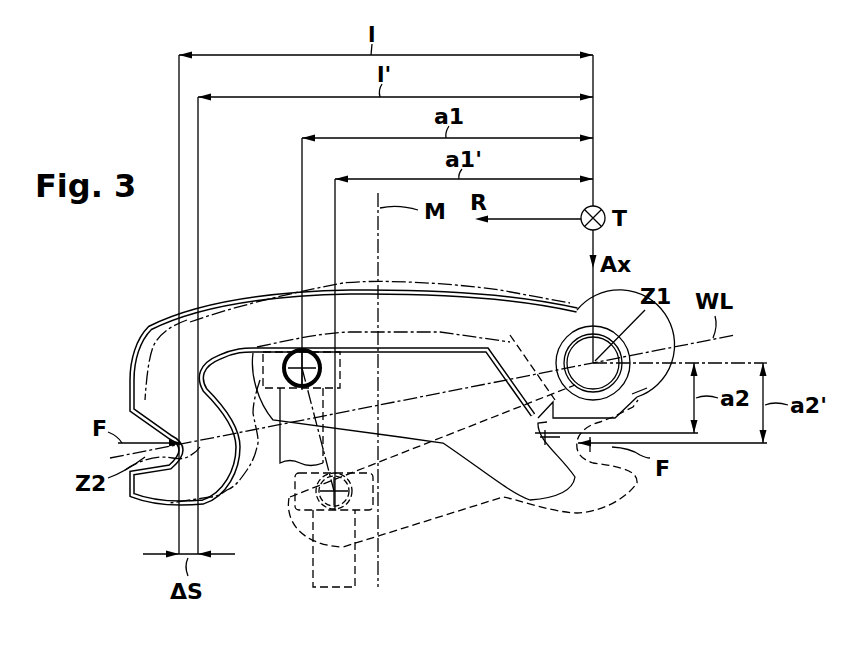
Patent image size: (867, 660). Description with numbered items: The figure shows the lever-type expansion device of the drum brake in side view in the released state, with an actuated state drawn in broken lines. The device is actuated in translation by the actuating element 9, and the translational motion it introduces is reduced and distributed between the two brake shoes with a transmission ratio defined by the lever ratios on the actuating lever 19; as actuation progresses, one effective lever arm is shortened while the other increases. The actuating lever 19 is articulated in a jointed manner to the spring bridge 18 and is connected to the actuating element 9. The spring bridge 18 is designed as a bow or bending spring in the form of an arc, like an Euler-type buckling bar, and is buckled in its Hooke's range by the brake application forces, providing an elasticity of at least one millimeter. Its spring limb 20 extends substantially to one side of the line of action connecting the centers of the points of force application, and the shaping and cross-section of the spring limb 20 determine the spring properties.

The actuating element 9 is at (335, 570).
The spring bridge 18 is at (401, 286).
The actuating lever 19 is at (433, 518).
The spring limb 20 is at (428, 310).